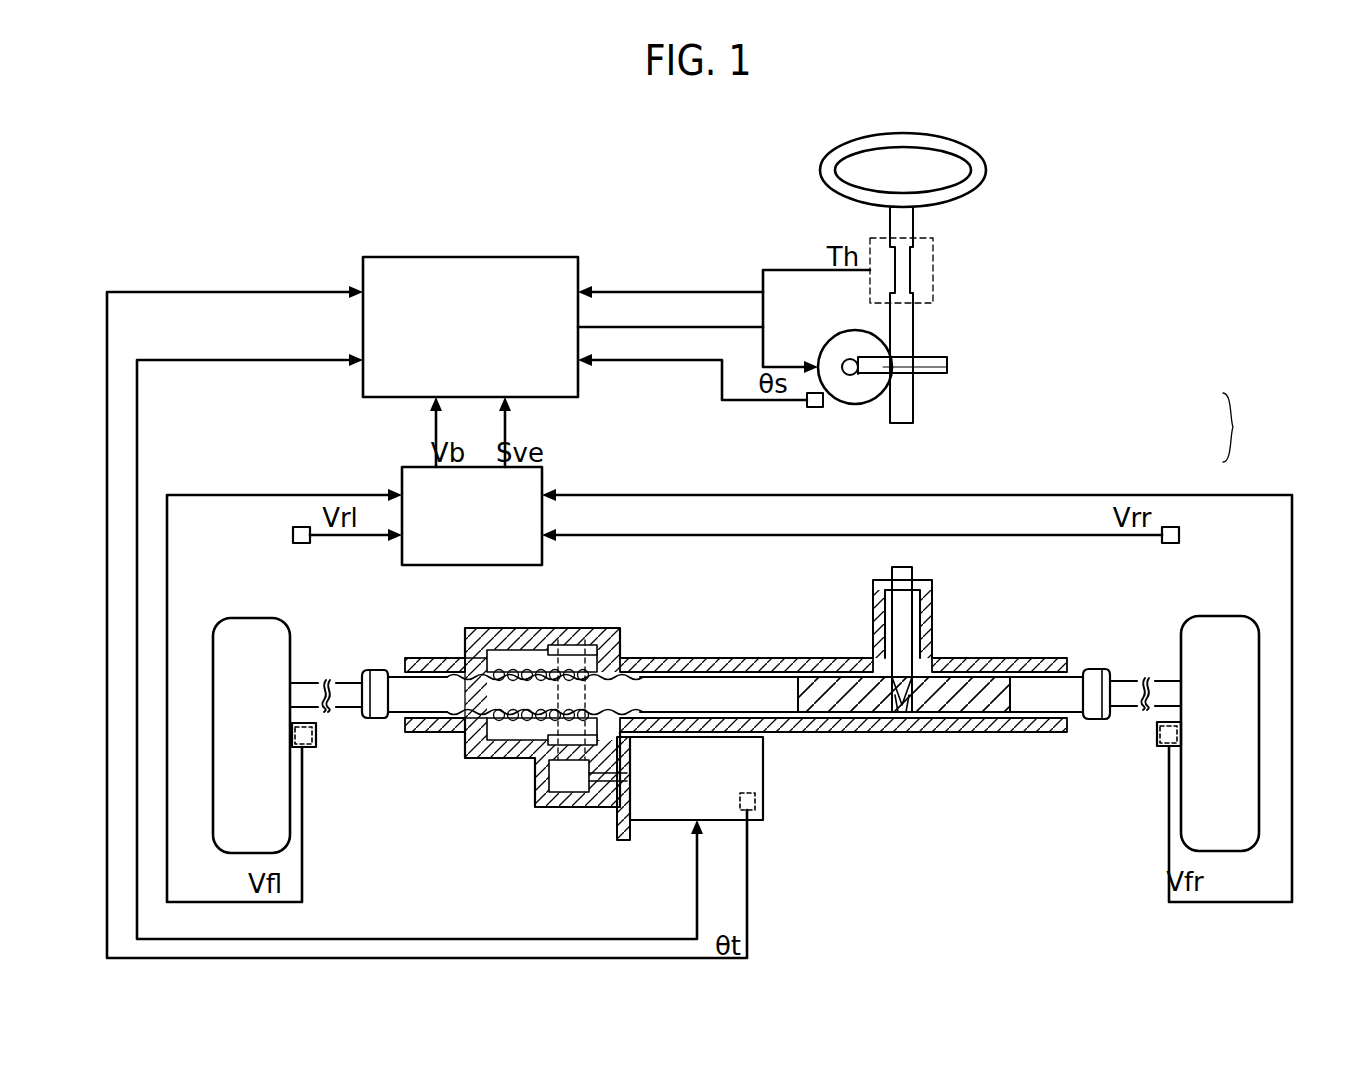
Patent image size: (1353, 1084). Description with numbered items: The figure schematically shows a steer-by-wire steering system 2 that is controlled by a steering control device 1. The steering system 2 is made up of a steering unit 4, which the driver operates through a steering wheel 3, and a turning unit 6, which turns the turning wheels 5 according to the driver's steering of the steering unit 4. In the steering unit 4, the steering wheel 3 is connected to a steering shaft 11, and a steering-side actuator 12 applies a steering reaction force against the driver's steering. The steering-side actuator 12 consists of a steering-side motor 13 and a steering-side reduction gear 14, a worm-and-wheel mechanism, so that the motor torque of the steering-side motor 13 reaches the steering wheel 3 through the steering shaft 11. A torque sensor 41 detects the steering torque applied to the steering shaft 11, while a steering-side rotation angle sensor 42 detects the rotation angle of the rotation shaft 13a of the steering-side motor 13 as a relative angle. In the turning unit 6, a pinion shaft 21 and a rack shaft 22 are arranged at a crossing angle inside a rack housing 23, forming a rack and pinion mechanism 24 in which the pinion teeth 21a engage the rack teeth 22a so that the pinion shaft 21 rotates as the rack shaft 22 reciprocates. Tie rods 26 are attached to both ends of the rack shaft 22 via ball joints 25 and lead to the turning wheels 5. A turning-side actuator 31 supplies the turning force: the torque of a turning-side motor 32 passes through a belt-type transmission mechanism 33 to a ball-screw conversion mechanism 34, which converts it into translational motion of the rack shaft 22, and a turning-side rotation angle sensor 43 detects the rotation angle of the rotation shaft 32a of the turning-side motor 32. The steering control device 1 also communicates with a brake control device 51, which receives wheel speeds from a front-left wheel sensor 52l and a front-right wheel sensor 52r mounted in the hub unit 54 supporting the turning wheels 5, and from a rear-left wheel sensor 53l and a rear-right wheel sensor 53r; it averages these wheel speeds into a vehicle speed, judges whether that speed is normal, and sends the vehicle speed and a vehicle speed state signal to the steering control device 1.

The steering control device 1 is at (413, 257).
The steering system 2 is at (1237, 427).
The steering wheel 3 is at (968, 147).
The steering unit 4 is at (1160, 399).
The turning wheels 5 is at (248, 618).
The turning unit 6 is at (1165, 475).
The steering shaft 11 is at (915, 318).
The steering-side actuator 12 is at (986, 368).
The steering-side motor 13 is at (815, 355).
The rotation shaft 13a is at (847, 358).
The steering-side reduction gear 14 is at (858, 376).
The pinion shaft 21 is at (905, 567).
The pinion teeth 21a is at (905, 712).
The rack shaft 22 is at (712, 676).
The rack teeth 22a is at (845, 712).
The rack housing 23 is at (672, 658).
The rack and pinion mechanism 24 is at (933, 720).
The ball joints 25 is at (378, 670).
The tie rods 26 is at (304, 683).
The turning-side actuator 31 is at (413, 835).
The turning-side motor 32 is at (763, 803).
The rotation shaft 32a is at (600, 783).
The transmission mechanism 33 is at (548, 800).
The conversion mechanism 34 is at (481, 762).
The torque sensor 41 is at (933, 238).
The steering-side rotation angle sensor 42 is at (813, 407).
The turning-side rotation angle sensor 43 is at (742, 792).
The brake control device 51 is at (455, 565).
The front-left wheel sensor 52l is at (294, 735).
The front-right wheel sensor 52r is at (1180, 735).
The rear-left wheel sensor 53l is at (293, 535).
The rear-right wheel sensor 53r is at (1179, 535).
The hub unit 54 is at (300, 722).